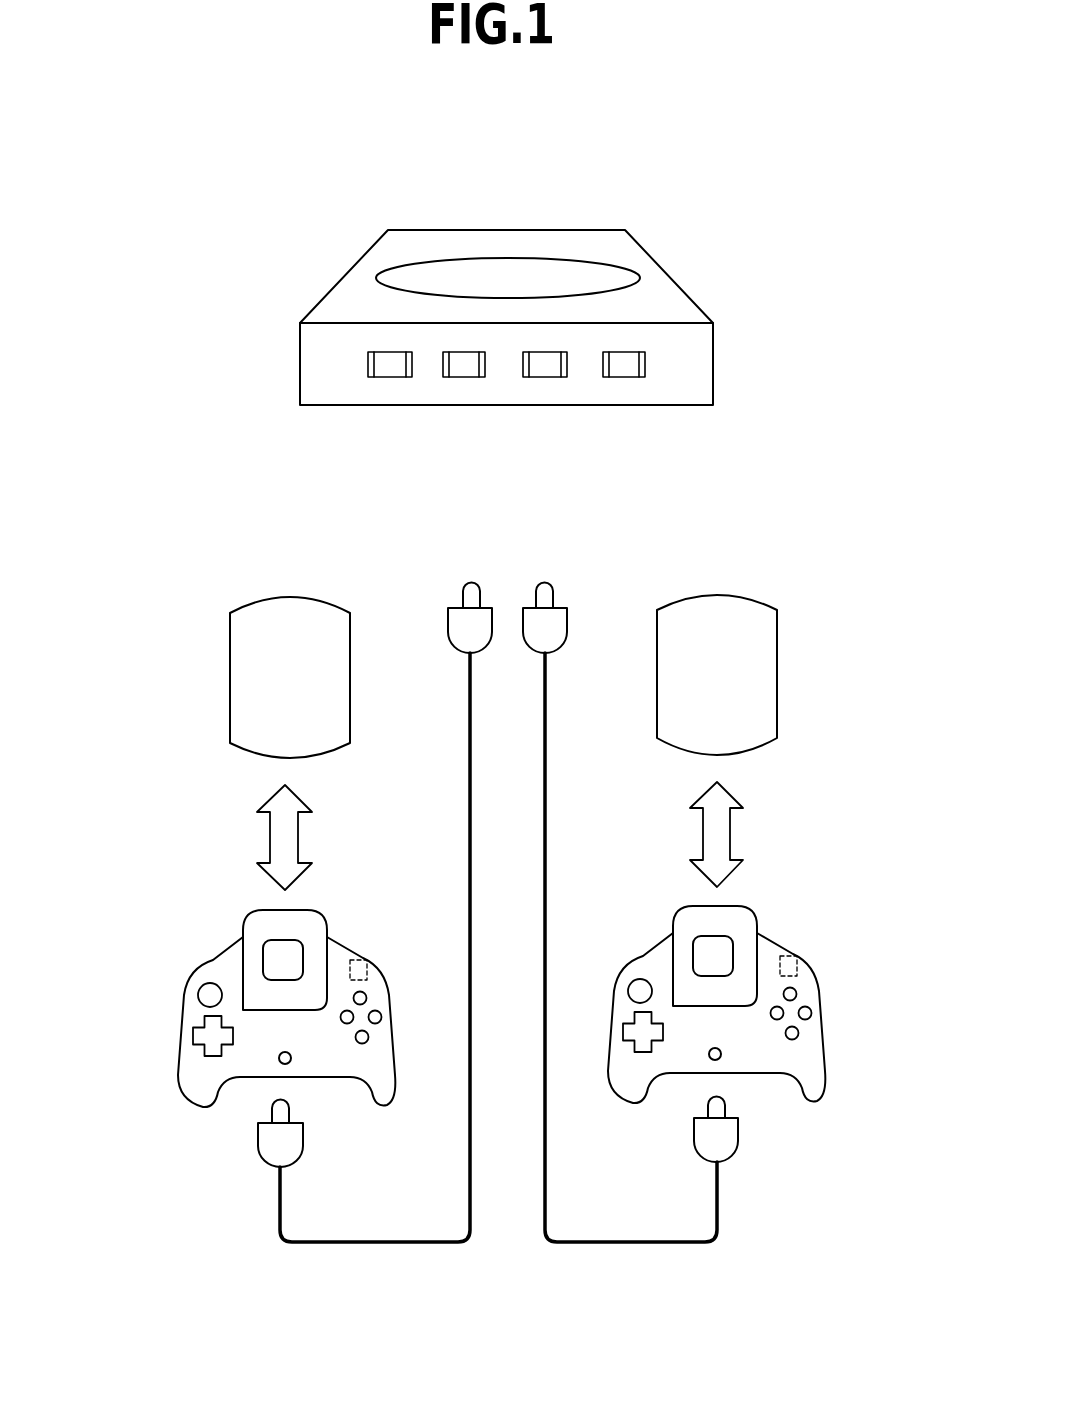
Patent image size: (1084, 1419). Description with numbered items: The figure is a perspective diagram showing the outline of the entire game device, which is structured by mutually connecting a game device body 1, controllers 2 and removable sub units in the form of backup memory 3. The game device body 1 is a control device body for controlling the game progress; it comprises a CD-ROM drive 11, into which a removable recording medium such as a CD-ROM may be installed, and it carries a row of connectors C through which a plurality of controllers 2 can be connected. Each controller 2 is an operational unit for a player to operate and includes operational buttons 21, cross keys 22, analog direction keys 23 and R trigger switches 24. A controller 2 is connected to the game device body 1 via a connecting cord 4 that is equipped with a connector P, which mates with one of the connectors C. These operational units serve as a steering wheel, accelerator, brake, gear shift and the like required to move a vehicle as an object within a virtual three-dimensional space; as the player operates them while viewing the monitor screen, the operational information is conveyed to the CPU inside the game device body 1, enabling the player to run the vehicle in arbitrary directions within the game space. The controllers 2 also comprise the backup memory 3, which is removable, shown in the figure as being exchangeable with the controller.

The game device body 1 is at (448, 228).
The CD-ROM drive 11 is at (612, 273).
The connectors C is at (623, 367).
The backup memory 3 is at (715, 593).
The connector P is at (522, 607).
The connecting cord 4 is at (570, 1245).
The controller 2 is at (228, 1125).
The operational buttons 21 is at (400, 993).
The cross keys 22 is at (207, 1062).
The analog direction keys 23 is at (208, 982).
The R trigger switches 24 is at (357, 960).